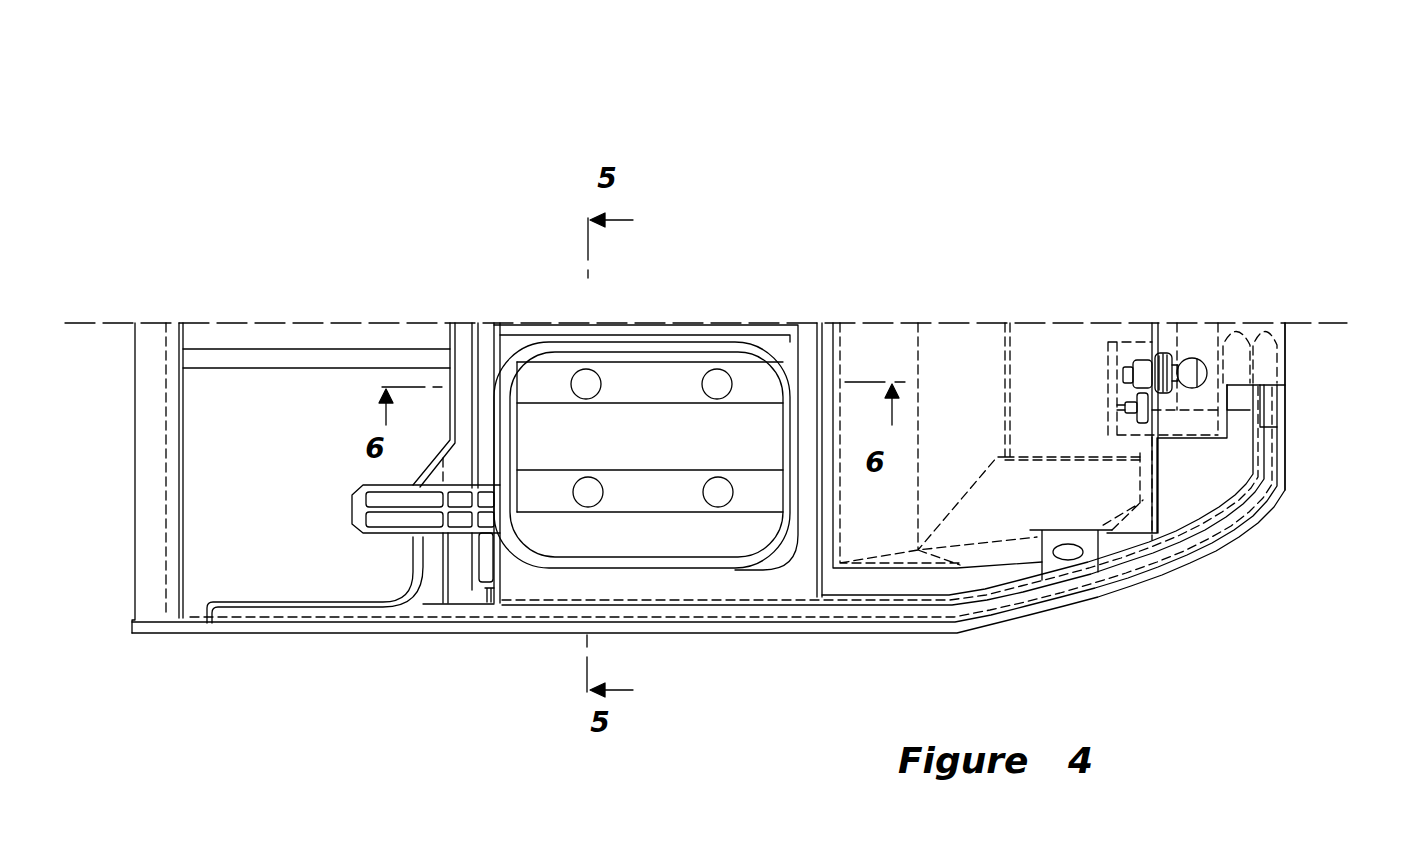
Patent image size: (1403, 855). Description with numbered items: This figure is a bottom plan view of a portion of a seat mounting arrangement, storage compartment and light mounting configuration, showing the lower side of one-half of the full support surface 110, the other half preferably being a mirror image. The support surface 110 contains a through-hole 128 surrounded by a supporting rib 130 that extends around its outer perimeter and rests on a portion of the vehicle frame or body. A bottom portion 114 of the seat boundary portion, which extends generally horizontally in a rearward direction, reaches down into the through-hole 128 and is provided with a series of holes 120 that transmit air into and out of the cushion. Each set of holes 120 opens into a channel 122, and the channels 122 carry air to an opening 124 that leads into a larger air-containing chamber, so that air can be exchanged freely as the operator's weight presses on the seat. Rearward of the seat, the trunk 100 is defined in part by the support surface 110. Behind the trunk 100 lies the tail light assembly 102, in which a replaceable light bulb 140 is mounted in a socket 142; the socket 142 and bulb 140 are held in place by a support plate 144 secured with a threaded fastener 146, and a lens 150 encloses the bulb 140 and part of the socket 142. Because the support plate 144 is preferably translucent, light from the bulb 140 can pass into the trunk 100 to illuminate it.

The trunk 100 is at (992, 407).
The tail light assembly 102 is at (1312, 348).
The support surface 110 is at (462, 333).
The bottom portion 114 is at (628, 455).
The holes 120 is at (598, 372).
The channel 122 is at (676, 372).
The opening 124 is at (508, 447).
The through-hole 128 is at (779, 432).
The supporting rib 130 is at (777, 342).
The light bulb 140 is at (1190, 358).
The socket 142 is at (1138, 365).
The support plate 144 is at (1162, 355).
The threaded fastener 146 is at (1117, 408).
The lens 150 is at (1260, 362).